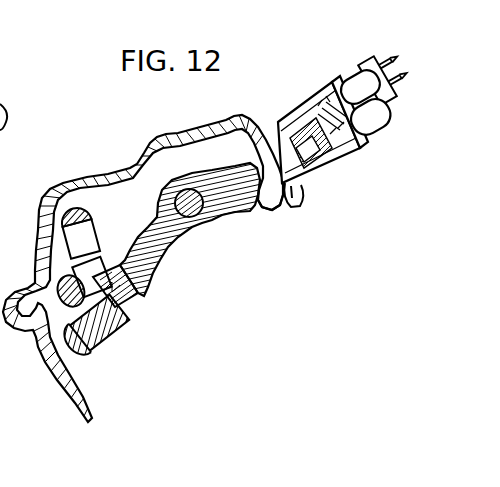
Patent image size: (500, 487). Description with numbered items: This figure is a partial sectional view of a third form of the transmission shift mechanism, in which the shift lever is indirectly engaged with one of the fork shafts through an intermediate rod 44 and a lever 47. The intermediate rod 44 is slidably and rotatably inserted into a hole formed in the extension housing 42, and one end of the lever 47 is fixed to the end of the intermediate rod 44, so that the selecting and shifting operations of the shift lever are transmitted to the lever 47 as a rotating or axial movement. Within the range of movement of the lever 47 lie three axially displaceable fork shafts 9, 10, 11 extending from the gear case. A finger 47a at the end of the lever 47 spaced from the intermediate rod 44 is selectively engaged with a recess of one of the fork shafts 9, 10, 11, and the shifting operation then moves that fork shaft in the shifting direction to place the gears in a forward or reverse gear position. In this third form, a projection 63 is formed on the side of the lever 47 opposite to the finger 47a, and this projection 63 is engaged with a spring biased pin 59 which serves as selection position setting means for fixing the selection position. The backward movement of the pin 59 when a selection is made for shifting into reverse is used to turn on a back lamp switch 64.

The fork shaft 9 is at (93, 230).
The fork shaft 10 is at (77, 292).
The fork shaft 11 is at (102, 340).
The extension housing 42 is at (170, 136).
The intermediate rod 44 is at (198, 216).
The lever 47 is at (163, 258).
The finger 47a is at (133, 302).
The pin 59 is at (296, 206).
The projection 63 is at (266, 212).
The back lamp switch 64 is at (386, 126).